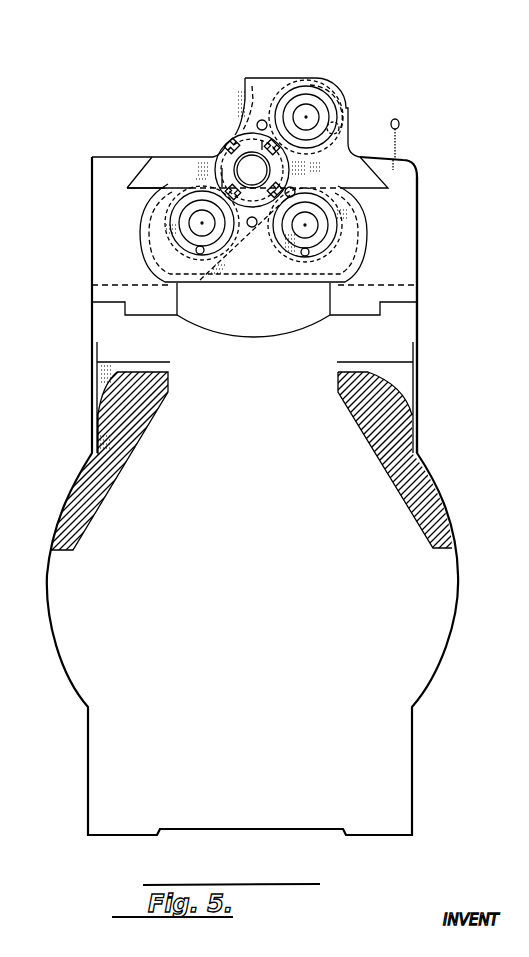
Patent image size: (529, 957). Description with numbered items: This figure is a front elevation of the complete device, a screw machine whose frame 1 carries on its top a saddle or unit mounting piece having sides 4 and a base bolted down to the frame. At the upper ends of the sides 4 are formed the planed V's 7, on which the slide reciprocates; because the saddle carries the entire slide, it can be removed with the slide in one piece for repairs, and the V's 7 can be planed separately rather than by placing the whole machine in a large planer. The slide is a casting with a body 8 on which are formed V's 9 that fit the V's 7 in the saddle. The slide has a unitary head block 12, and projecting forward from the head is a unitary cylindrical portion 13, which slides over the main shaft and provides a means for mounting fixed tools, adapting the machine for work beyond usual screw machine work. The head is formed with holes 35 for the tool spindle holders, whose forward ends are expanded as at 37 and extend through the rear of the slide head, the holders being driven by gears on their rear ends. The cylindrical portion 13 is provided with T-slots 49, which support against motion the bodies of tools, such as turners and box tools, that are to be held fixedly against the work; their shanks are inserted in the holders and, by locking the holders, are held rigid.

The frame 1 is at (447, 517).
The sides 4 is at (412, 233).
The planed V's 7 is at (127, 175).
The body 8 is at (355, 167).
The V's 9 is at (150, 172).
The head block 12 is at (268, 237).
The cylindrical portion 13 is at (235, 140).
The holes 35 is at (335, 103).
The expanded forward ends 37 is at (315, 93).
The T-slots 49 is at (230, 147).